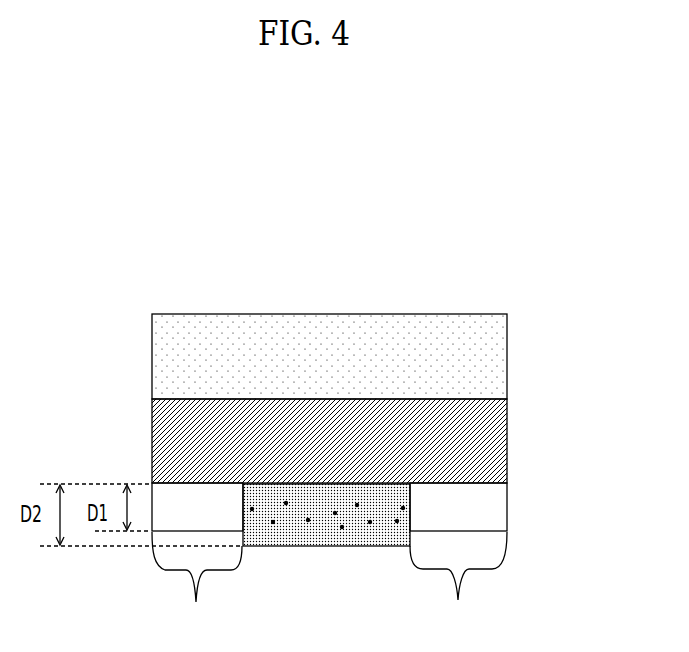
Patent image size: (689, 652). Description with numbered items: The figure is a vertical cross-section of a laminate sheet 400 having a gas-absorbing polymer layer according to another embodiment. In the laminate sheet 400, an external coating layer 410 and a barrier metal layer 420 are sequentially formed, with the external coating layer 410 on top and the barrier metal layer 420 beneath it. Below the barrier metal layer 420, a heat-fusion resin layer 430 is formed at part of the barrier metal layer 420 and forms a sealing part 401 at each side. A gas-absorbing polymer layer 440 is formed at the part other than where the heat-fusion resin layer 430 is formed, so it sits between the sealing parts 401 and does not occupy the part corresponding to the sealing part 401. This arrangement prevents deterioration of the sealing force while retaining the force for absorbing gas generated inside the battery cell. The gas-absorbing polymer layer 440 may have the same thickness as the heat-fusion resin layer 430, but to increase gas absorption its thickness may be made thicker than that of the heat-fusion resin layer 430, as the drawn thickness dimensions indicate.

The laminate sheet 400 is at (224, 272).
The sealing part 401 is at (329, 584).
The external coating layer 410 is at (468, 362).
The barrier metal layer 420 is at (468, 445).
The heat-fusion resin layer 430 is at (468, 520).
The gas-absorbing polymer layer 440 is at (300, 532).